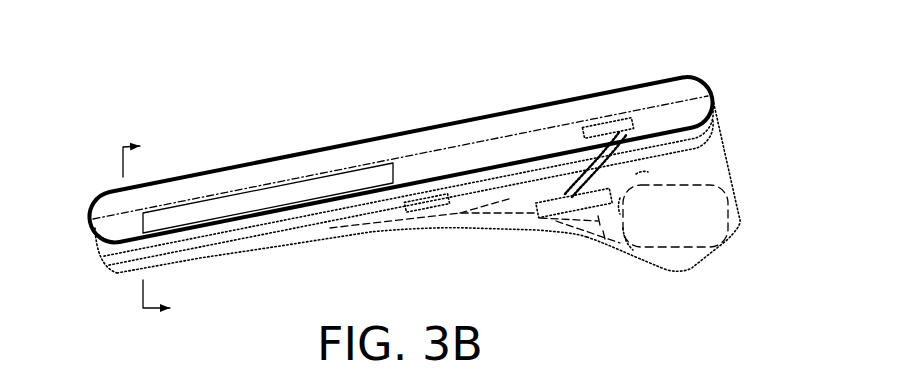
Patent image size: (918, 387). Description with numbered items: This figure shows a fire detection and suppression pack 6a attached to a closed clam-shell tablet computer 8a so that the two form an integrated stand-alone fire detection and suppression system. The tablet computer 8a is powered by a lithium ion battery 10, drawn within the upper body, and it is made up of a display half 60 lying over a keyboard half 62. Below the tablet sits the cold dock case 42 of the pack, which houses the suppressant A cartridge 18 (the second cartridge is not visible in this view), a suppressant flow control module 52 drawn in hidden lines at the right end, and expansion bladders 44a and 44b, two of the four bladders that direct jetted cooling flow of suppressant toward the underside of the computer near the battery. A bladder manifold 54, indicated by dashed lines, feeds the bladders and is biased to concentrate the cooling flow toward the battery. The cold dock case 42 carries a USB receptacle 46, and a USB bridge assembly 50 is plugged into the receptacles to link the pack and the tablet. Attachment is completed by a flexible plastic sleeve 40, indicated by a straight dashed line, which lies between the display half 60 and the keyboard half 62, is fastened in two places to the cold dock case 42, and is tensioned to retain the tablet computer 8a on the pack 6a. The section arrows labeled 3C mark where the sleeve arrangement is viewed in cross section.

The fire detection and suppression pack 6a is at (440, 229).
The tablet computer 8a is at (281, 155).
The lithium ion battery 10 is at (220, 198).
The cartridge 18 is at (707, 167).
The section line 3C is at (144, 226).
The flexible plastic sleeve 40 is at (122, 217).
The cold dock case 42 is at (310, 238).
The expansion bladder 44a is at (382, 203).
The expansion bladder 44b is at (470, 183).
The USB receptacle 46 is at (553, 217).
The USB bridge assembly 50 is at (590, 157).
The suppressant flow control module 52 is at (659, 249).
The bladder manifold 54 is at (497, 214).
The display half 60 is at (351, 141).
The keyboard half 62 is at (228, 222).